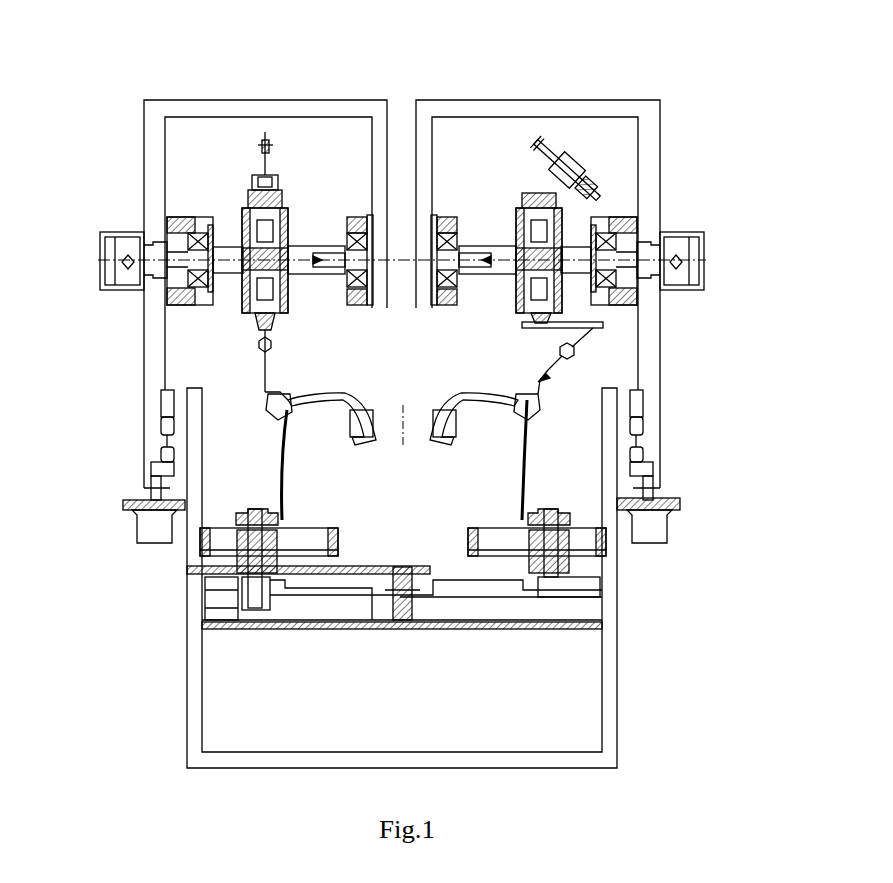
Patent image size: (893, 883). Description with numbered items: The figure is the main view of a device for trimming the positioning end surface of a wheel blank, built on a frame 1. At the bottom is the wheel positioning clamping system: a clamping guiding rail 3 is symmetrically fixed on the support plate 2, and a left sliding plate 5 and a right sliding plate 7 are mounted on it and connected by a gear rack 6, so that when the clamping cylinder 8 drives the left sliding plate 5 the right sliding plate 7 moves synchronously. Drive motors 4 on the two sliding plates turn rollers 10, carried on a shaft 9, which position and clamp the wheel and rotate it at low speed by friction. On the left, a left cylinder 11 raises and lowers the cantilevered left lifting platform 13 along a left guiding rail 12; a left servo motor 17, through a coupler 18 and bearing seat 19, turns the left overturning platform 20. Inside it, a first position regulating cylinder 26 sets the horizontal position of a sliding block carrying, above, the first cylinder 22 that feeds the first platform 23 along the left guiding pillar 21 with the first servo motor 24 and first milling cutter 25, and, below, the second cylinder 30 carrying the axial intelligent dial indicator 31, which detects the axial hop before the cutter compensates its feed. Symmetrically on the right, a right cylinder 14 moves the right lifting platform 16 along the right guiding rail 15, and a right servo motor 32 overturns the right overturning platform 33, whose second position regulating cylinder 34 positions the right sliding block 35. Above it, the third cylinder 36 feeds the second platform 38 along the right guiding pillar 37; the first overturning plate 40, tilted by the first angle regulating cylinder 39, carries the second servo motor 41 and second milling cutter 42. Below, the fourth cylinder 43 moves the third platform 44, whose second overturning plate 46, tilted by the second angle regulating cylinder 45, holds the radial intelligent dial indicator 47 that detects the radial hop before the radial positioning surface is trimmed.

The frame 1 is at (192, 688).
The support plate 2 is at (200, 672).
The clamping guiding rail 3 is at (210, 655).
The drive motor 4 is at (233, 613).
The left sliding plate 5 is at (236, 583).
The gear rack 6 is at (405, 580).
The right sliding plate 7 is at (570, 578).
The clamping cylinder 8 is at (200, 570).
The shaft 9 is at (572, 562).
The roller 10 is at (600, 543).
The left cylinder 11 is at (158, 522).
The left guiding rail 12 is at (177, 473).
The left lifting platform 13 is at (157, 443).
The right cylinder 14 is at (662, 533).
The right guiding rail 15 is at (665, 502).
The right lifting platform 16 is at (653, 443).
The left servo motor 17 is at (108, 273).
The coupler 18 is at (140, 224).
The bearing seat 19 is at (166, 219).
The left overturning platform 20 is at (195, 230).
The left guiding pillar 21 is at (212, 232).
The first cylinder 22 is at (228, 235).
The first platform 23 is at (240, 205).
The first servo motor 24 is at (252, 180).
The first milling cutter 25 is at (260, 150).
The first position regulating cylinder 26 is at (327, 255).
The second cylinder 30 is at (253, 310).
The axial intelligent dial indicator 31 is at (262, 342).
The right servo motor 32 is at (697, 273).
The right overturning platform 33 is at (640, 297).
The second position regulating cylinder 34 is at (490, 258).
The right sliding block 35 is at (628, 285).
The third cylinder 36 is at (615, 245).
The right guiding pillar 37 is at (605, 238).
The second platform 38 is at (593, 217).
The first angle regulating cylinder 39 is at (553, 207).
The first overturning plate 40 is at (585, 180).
The second servo motor 41 is at (565, 160).
The second milling cutter 42 is at (545, 145).
The fourth cylinder 43 is at (600, 322).
The third platform 44 is at (593, 333).
The second angle regulating cylinder 45 is at (582, 343).
The second overturning plate 46 is at (570, 352).
The radial intelligent dial indicator 47 is at (550, 370).